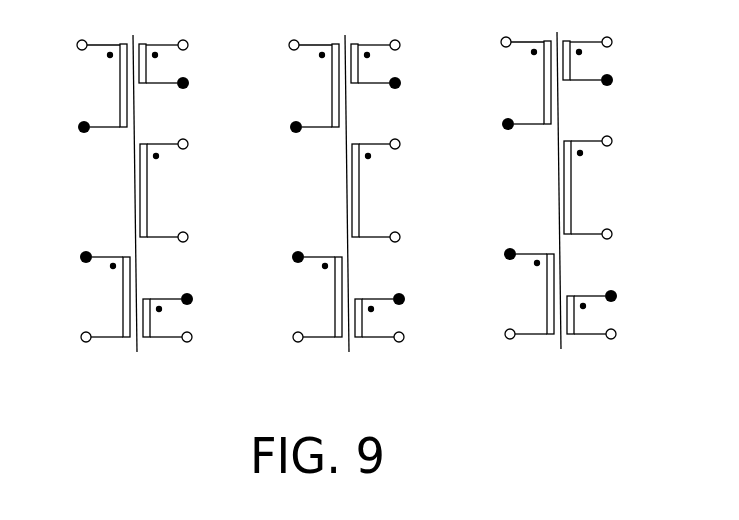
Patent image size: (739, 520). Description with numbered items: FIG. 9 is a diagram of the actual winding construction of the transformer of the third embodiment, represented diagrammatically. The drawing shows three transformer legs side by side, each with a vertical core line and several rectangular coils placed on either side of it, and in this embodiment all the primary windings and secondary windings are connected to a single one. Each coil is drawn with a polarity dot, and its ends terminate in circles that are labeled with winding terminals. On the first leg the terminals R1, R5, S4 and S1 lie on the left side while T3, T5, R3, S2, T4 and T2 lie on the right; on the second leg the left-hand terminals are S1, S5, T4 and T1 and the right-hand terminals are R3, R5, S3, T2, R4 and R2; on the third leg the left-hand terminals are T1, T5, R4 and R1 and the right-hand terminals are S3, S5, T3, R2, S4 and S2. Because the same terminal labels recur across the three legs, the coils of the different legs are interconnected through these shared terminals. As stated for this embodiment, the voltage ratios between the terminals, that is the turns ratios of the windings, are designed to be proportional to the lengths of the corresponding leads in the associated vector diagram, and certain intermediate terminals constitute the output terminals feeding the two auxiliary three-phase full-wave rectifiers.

The R-phase primary winding terminal 1 R1 is at (296, 192).
The R-phase winding terminal 2 R2 is at (503, 289).
The R-phase winding terminal 3 R3 is at (289, 100).
The R-phase winding terminal 4 R4 is at (452, 265).
The R-phase winding terminal 5 R5 is at (238, 121).
The S-phase winding terminal 1 S1 is at (190, 194).
The S-phase winding terminal 2 S2 is at (397, 287).
The S-phase winding terminal 3 S3 is at (500, 98).
The S-phase winding terminal 4 S4 is at (345, 265).
The S-phase winding terminal 5 S5 is at (450, 120).
The T-phase winding terminal 1 T1 is at (402, 192).
The T-phase winding terminal 2 T2 is at (291, 290).
The T-phase winding terminal 3 T3 is at (395, 98).
The T-phase winding terminal 4 T4 is at (240, 266).
The T-phase winding terminal 5 T5 is at (344, 120).